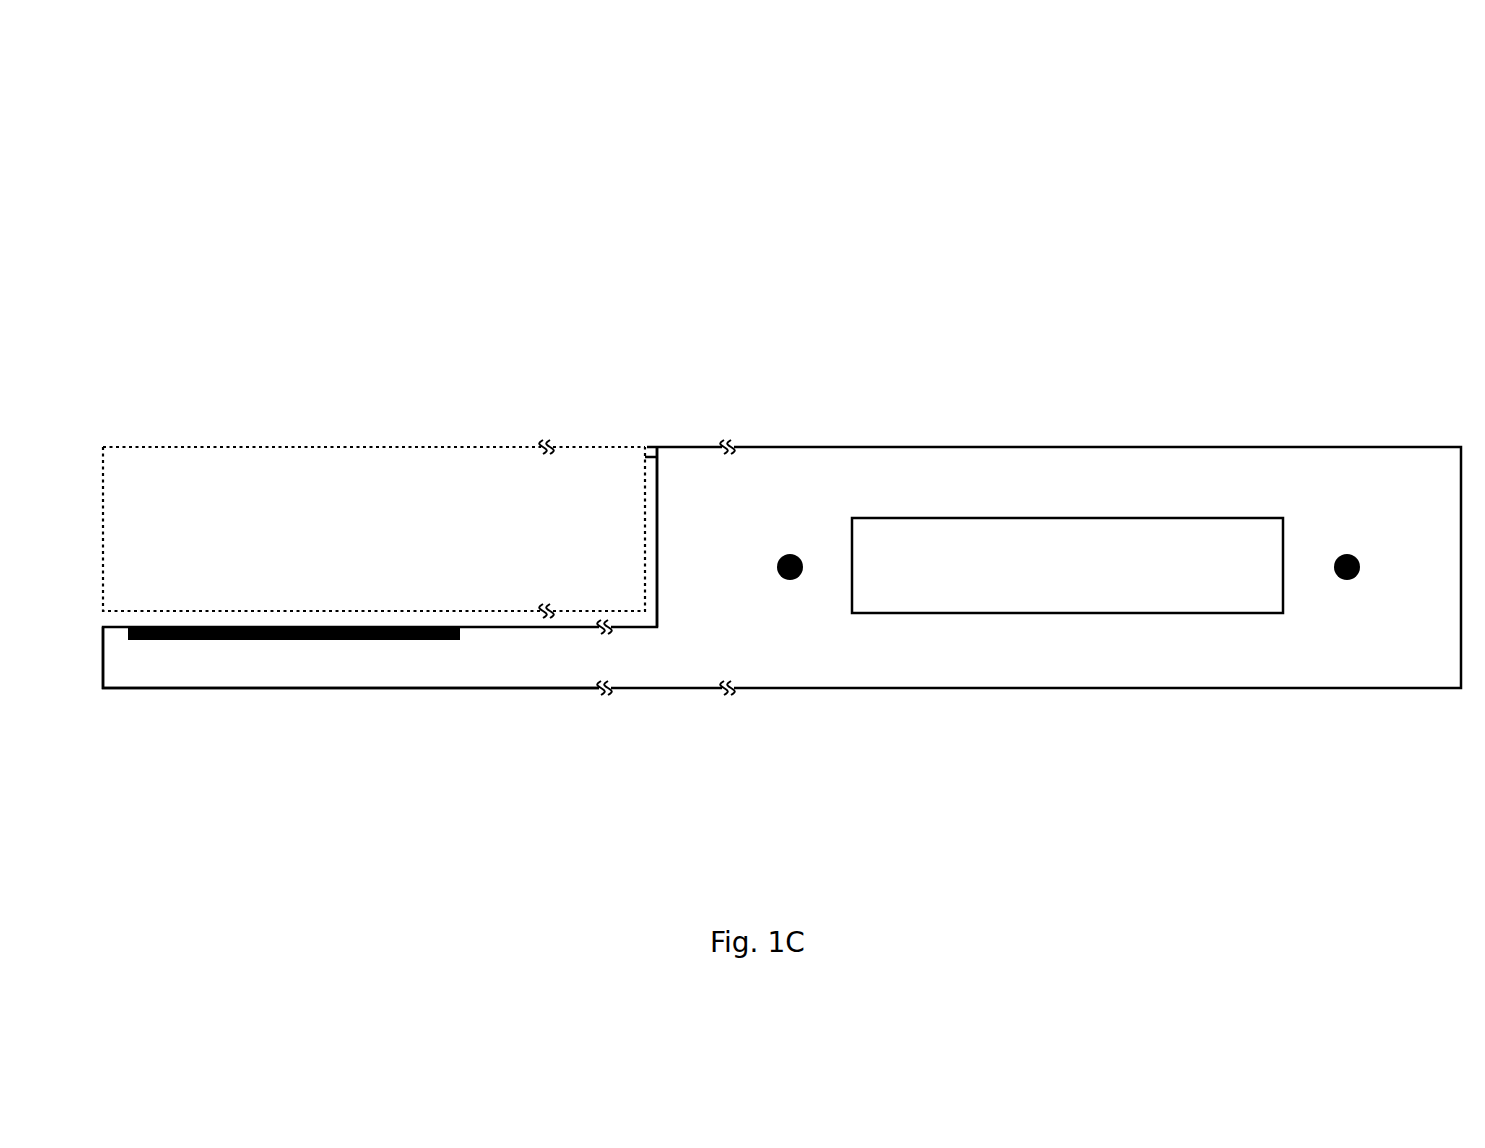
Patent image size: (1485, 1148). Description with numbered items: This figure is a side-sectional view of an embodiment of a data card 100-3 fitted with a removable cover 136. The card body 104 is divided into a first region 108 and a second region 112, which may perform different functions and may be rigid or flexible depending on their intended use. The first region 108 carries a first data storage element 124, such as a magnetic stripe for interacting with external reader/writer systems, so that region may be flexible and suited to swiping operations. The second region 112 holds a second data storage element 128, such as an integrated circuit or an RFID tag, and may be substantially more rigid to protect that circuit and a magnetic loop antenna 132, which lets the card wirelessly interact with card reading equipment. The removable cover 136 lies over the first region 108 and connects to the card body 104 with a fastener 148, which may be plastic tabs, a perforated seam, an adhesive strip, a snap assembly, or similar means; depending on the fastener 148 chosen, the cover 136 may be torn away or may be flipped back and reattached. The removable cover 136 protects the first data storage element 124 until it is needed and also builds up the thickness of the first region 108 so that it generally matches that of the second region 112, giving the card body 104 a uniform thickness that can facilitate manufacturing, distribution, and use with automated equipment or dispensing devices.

The data card 100-3 is at (852, 191).
The card body 104 is at (657, 627).
The first region 108 is at (263, 687).
The second region 112 is at (1132, 688).
The first data storage element 124 is at (440, 640).
The second data storage element 128 is at (1190, 567).
The magnetic loop antenna 132 is at (1340, 556).
The removable cover 136 is at (440, 447).
The fastener 148 is at (650, 447).